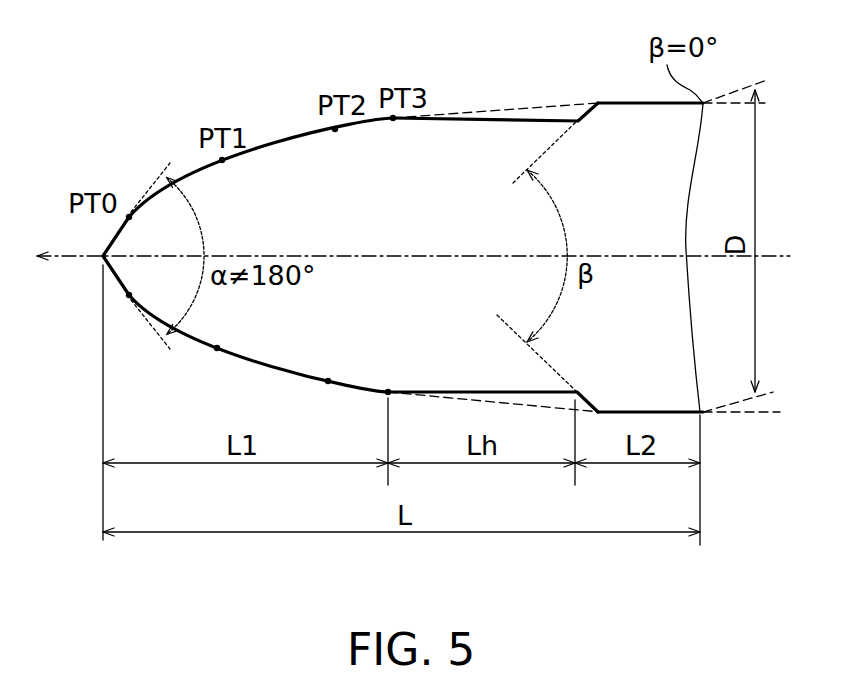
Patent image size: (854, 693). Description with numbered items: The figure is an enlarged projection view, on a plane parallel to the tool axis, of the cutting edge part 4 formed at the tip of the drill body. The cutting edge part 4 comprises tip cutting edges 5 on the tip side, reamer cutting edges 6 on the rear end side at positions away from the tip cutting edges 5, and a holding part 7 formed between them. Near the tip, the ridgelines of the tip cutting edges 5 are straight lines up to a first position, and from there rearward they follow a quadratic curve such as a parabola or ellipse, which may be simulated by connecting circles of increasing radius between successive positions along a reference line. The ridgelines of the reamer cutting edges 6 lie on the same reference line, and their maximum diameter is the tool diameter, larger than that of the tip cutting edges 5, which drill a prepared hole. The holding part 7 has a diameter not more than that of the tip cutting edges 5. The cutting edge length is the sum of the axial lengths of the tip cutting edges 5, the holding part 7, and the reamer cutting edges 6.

The cutting edge part 4 is at (399, 221).
The tip cutting edges 5 is at (288, 142).
The reamer cutting edges 6 is at (647, 102).
The holding part 7 is at (520, 120).